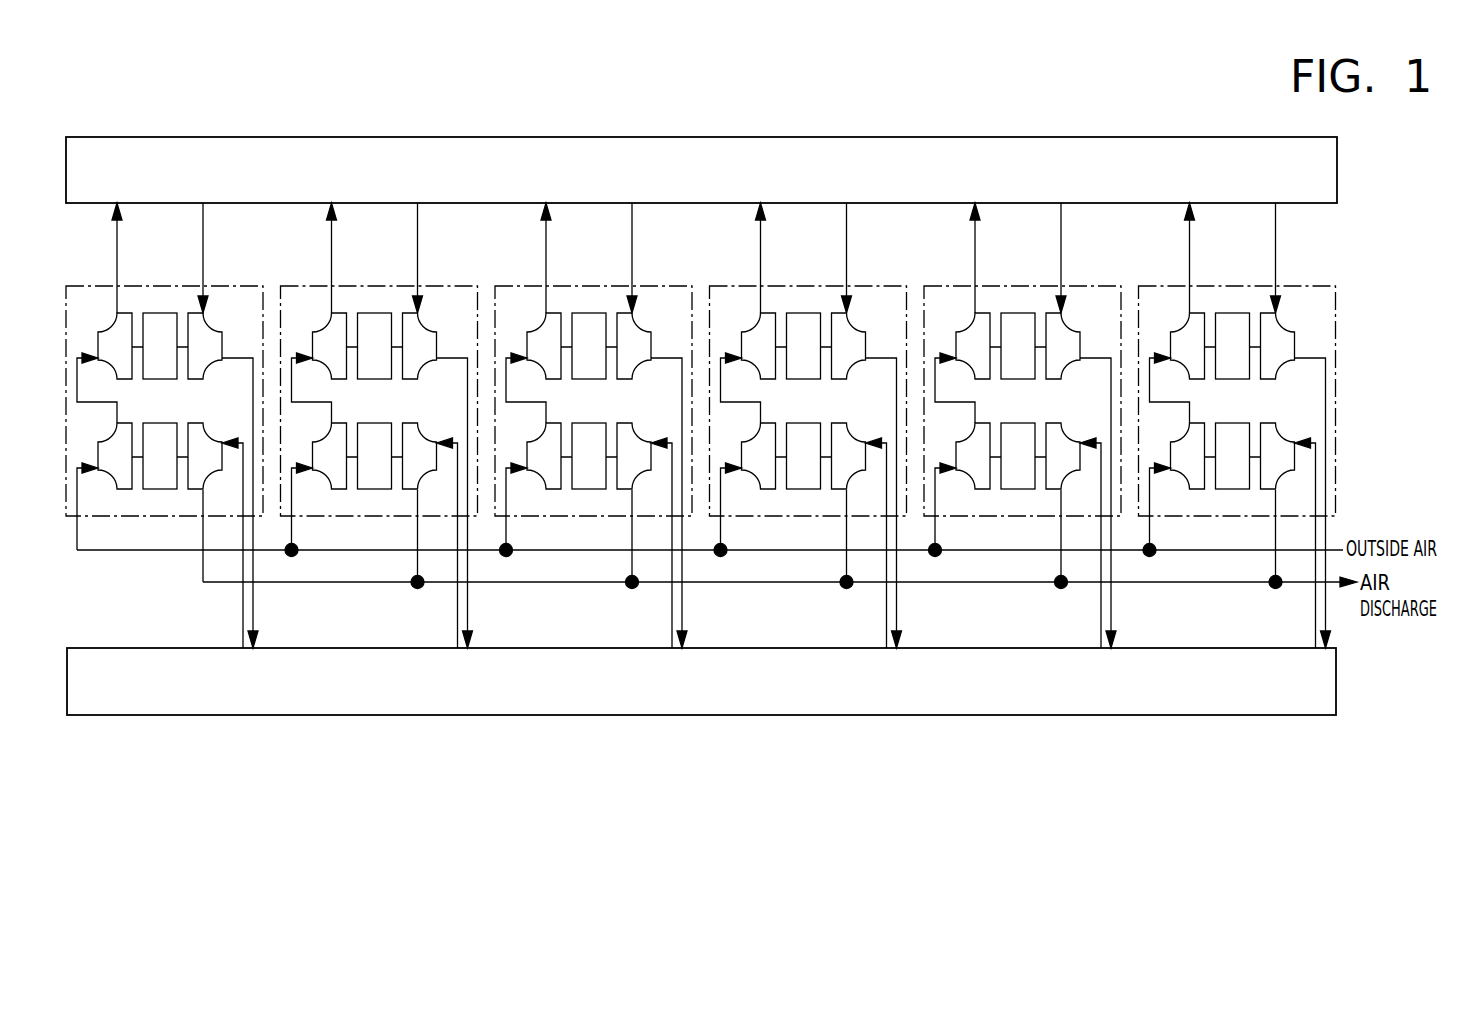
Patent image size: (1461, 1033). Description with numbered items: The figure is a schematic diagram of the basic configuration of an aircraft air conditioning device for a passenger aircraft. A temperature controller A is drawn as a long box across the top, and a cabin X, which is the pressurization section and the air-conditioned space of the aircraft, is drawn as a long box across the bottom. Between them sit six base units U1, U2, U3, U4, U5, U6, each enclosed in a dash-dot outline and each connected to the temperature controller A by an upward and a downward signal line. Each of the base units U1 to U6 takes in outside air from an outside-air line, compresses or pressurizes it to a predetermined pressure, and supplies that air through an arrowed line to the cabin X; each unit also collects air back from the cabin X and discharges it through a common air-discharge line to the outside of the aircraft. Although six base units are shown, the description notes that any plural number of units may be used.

The temperature controller A is at (72, 137).
The cabin X is at (74, 648).
The base unit U1 is at (163, 285).
The base unit U2 is at (379, 425).
The base unit U3 is at (593, 425).
The base unit U4 is at (808, 425).
The base unit U5 is at (1022, 425).
The base unit U6 is at (1237, 425).